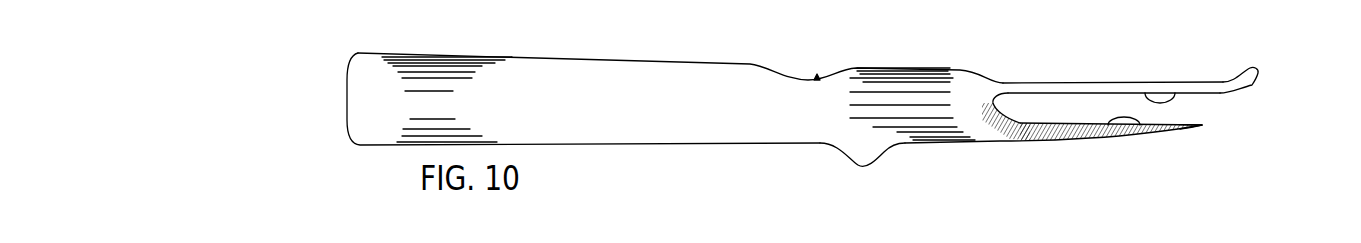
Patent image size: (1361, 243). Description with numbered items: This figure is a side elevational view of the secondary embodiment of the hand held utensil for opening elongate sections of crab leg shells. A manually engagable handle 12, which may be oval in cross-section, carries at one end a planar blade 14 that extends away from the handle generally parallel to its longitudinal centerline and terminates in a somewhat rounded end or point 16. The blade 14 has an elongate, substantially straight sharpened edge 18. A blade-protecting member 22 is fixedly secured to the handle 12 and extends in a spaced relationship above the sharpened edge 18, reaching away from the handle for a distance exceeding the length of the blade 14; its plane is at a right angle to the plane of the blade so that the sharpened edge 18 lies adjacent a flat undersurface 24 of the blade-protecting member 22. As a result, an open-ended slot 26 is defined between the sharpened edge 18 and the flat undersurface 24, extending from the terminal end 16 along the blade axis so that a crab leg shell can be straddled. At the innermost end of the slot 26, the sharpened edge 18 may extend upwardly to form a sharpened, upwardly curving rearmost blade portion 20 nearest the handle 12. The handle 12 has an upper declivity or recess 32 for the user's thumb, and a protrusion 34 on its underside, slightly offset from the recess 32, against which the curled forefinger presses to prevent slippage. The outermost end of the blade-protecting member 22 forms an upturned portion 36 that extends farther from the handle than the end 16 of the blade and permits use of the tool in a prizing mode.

The handle 12 is at (614, 68).
The planar blade 14 is at (1039, 138).
The end or point of the blade 16 is at (1208, 123).
The sharpened edge 18 is at (1105, 131).
The rearmost blade portion 20 is at (1008, 133).
The blade-protecting member 22 is at (1048, 80).
The flat undersurface 24 is at (1177, 92).
The open-ended slot 26 is at (1207, 107).
The upper declivity or recess 32 is at (817, 78).
The protrusion 34 is at (860, 151).
The upturned portion 36 is at (1255, 84).